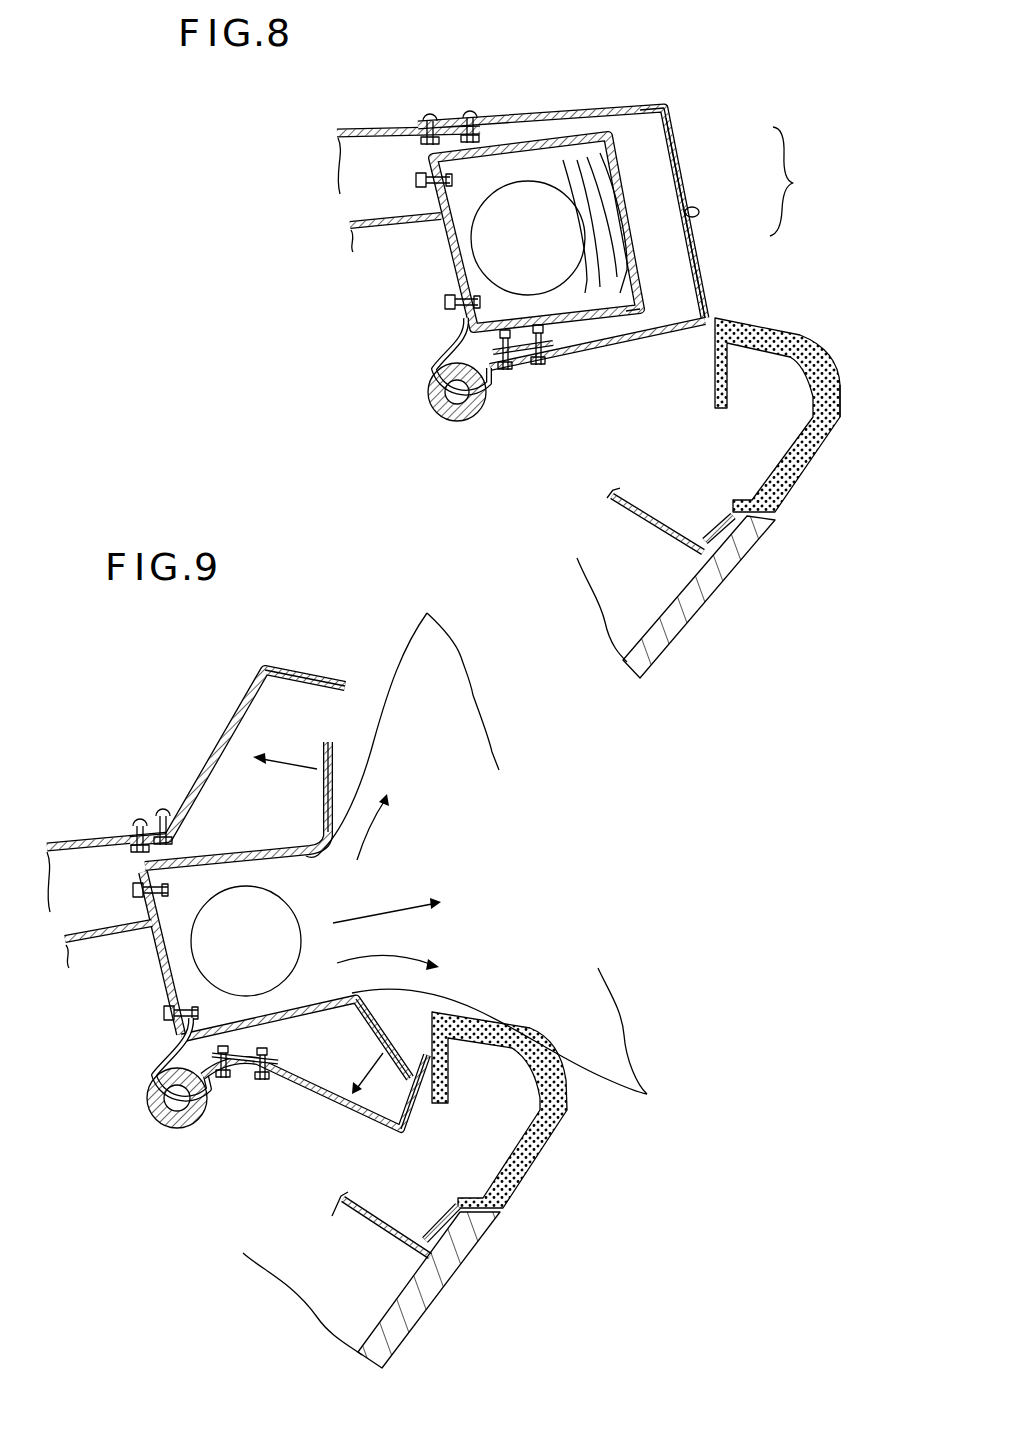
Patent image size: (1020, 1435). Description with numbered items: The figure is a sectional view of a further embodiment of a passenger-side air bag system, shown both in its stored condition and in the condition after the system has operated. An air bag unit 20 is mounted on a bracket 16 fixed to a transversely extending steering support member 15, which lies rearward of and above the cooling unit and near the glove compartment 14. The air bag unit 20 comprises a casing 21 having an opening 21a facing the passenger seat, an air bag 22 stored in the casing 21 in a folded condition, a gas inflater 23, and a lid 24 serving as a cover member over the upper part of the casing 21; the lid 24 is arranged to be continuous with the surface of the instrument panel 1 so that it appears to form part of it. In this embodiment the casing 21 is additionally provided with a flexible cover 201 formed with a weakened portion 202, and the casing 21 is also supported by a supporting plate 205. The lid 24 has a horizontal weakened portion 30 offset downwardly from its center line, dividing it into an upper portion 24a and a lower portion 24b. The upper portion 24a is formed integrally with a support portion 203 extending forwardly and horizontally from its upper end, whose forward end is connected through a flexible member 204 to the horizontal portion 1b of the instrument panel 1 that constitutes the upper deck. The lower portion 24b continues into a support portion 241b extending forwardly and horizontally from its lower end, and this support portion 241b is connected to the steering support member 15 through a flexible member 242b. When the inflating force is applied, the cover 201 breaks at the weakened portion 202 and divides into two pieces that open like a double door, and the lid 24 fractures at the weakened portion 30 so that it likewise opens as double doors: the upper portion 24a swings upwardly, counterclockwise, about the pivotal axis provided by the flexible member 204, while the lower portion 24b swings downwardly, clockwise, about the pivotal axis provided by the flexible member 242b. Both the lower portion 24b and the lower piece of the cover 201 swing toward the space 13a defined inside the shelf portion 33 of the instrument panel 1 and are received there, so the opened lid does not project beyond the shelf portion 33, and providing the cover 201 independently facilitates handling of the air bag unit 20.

In FIG. 8, the instrument panel 1 is at (842, 412).
In FIG. 9, the instrument panel 1 is at (564, 1110).
In FIG. 8, the horizontal portion 1b is at (380, 127).
In FIG. 9, the horizontal portion 1b is at (82, 842).
In FIG. 8, the space 13a is at (708, 440).
In FIG. 9, the space 13a is at (442, 1193).
In FIG. 8, the glove compartment 14 is at (712, 612).
In FIG. 8, the steering support member 15 is at (443, 418).
In FIG. 9, the steering support member 15 is at (175, 1128).
In FIG. 9, the bracket 16 is at (166, 1060).
In FIG. 8, the air bag unit 20 is at (533, 125).
In FIG. 9, the air bag unit 20 is at (148, 773).
In FIG. 8, the casing 21 is at (560, 150).
In FIG. 9, the casing 21 is at (269, 840).
In FIG. 8, the opening 21a is at (650, 302).
In FIG. 8, the air bag 22 is at (665, 104).
In FIG. 9, the air bag 22 is at (383, 702).
In FIG. 8, the gas inflater 23 is at (575, 195).
In FIG. 9, the gas inflater 23 is at (253, 890).
In FIG. 8, the lid 24 is at (798, 181).
In FIG. 8, the upper portion 24a is at (686, 165).
In FIG. 9, the upper portion 24a is at (302, 672).
In FIG. 8, the lower portion 24b is at (700, 222).
In FIG. 9, the lower portion 24b is at (417, 1104).
In FIG. 8, the weakened portion 30 is at (688, 214).
In FIG. 8, the shelf portion 33 is at (780, 333).
In FIG. 9, the shelf portion 33 is at (492, 1024).
In FIG. 8, the flexible cover 201 is at (674, 110).
In FIG. 9, the flexible cover 201 is at (335, 783).
In FIG. 8, the weakened portion 202 is at (678, 122).
In FIG. 8, the support portion 203 is at (503, 119).
In FIG. 9, the support portion 203 is at (214, 737).
In FIG. 8, the flexible member 204 is at (455, 118).
In FIG. 9, the flexible member 204 is at (180, 832).
In FIG. 8, the supporting plate 205 is at (394, 230).
In FIG. 9, the supporting plate 205 is at (100, 919).
In FIG. 8, the support portion 241b is at (656, 330).
In FIG. 9, the support portion 241b is at (364, 1117).
In FIG. 8, the flexible member 242b is at (530, 370).
In FIG. 9, the flexible member 242b is at (254, 1051).